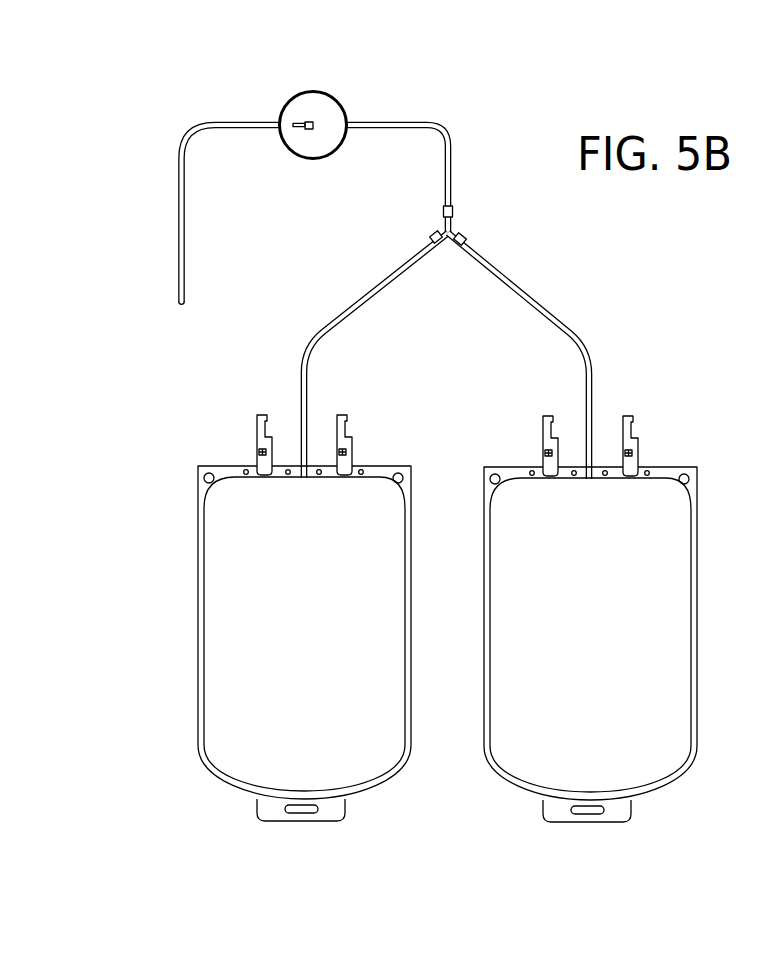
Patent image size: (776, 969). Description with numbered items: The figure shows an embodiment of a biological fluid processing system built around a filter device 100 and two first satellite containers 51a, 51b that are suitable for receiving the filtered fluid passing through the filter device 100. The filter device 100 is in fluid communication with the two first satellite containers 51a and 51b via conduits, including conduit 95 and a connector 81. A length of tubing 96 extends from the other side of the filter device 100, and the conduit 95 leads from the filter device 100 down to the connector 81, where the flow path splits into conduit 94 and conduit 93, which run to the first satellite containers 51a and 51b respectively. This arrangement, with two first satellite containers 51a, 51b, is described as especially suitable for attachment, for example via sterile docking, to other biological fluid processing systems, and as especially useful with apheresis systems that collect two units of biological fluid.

The filter device 100 is at (337, 82).
The conduit 95 is at (441, 133).
The tubing 96 is at (179, 232).
The connector 81 is at (453, 226).
The conduit 94 is at (377, 285).
The conduit 93 is at (520, 287).
The first satellite container 51a is at (352, 748).
The first satellite container 51b is at (638, 749).